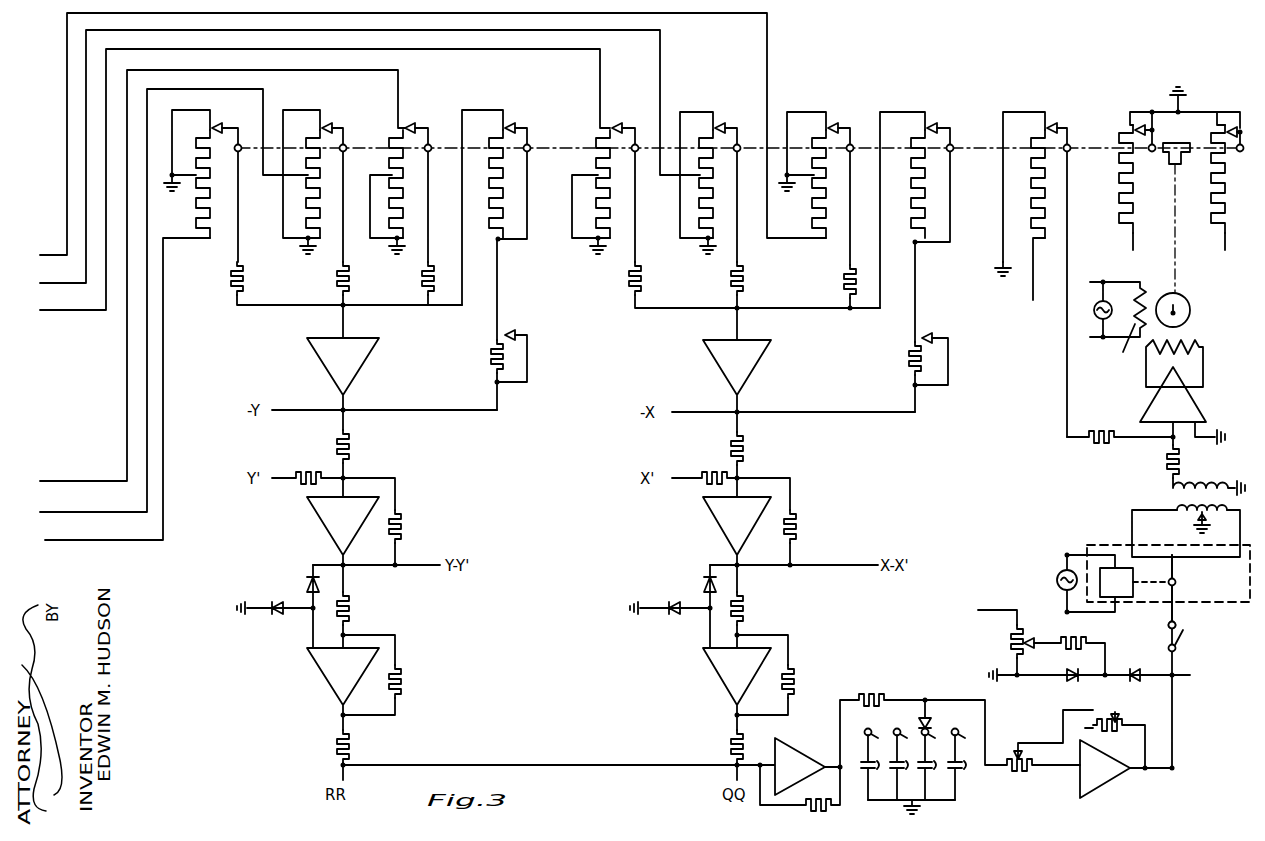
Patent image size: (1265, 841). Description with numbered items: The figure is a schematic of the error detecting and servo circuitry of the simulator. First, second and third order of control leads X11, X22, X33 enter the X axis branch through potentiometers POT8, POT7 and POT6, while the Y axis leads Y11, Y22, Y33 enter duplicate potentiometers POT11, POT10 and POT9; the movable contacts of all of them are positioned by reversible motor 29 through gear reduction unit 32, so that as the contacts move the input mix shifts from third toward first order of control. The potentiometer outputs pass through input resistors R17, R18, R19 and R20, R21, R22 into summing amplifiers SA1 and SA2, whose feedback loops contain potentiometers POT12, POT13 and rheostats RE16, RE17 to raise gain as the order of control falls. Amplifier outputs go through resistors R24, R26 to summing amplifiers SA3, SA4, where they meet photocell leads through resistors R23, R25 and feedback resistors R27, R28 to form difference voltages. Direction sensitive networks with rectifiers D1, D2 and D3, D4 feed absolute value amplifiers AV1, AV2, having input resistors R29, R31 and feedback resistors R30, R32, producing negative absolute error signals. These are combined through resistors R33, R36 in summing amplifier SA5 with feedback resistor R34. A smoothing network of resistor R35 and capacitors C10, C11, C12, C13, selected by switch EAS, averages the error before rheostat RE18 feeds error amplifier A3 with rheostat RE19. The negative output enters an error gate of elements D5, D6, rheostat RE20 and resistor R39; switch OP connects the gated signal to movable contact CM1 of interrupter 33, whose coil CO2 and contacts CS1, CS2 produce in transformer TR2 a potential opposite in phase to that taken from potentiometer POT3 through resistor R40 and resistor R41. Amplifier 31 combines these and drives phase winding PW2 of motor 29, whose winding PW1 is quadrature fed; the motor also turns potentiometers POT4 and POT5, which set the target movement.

The first order of control output lead X11 is at (417, 139).
The second order of control output lead X22 is at (354, 162).
The third order of control output lead X33 is at (309, 185).
The first order of control output lead (Y axis) Y11 is at (108, 394).
The second order of control output lead (Y axis) Y22 is at (157, 306).
The third order of control output lead (Y axis) Y33 is at (206, 281).
The potentiometer POT3 is at (1027, 113).
The potentiometer POT4 is at (1220, 114).
The potentiometer POT5 is at (1123, 115).
The potentiometer POT6 is at (618, 113).
The potentiometer POT7 is at (698, 113).
The potentiometer POT8 is at (798, 113).
The potentiometer POT9 is at (419, 113).
The potentiometer POT10 is at (317, 113).
The potentiometer POT11 is at (224, 122).
The potentiometer POT12 is at (903, 113).
The potentiometer POT13 is at (507, 113).
The gear reduction unit 32 is at (1171, 143).
The reversible position motor 29 is at (1190, 305).
The amplifier 31 is at (1182, 405).
The interrupter 33 is at (1242, 602).
The switch OP is at (1184, 636).
The input resistor R17 is at (630, 283).
The input resistor R18 is at (731, 283).
The input resistor R19 is at (843, 282).
The input resistor R20 is at (421, 283).
The input resistor R21 is at (337, 283).
The input resistor R22 is at (229, 272).
The resistor R23 is at (697, 470).
The input resistor R24 is at (742, 445).
The resistor R25 is at (298, 470).
The input resistor R26 is at (348, 449).
The resistor R27 is at (793, 528).
The resistor R28 is at (398, 528).
The input resistor R29 is at (742, 609).
The resistor R30 is at (791, 685).
The input resistor R31 is at (350, 609).
The resistor R32 is at (398, 685).
The input resistor R33 is at (333, 741).
The resistor R34 is at (800, 788).
The resistor R35 is at (877, 697).
The input resistor R36 is at (729, 731).
The resistor R39 is at (1081, 640).
The resistor R40 is at (1093, 430).
The resistor R41 is at (1166, 458).
The rheostat RE16 is at (910, 356).
The rheostat RE17 is at (490, 351).
The rheostat RE18 is at (1048, 758).
The rheostat RE19 is at (1120, 720).
The rheostat RE20 is at (987, 639).
The summing amplifier SA1 is at (737, 376).
The summing amplifier SA2 is at (343, 374).
The summing amplifier SA3 is at (737, 521).
The summing amplifier SA4 is at (343, 521).
The summing amplifier SA5 is at (800, 766).
The absolute value operational amplifier AV1 is at (737, 689).
The absolute value operational amplifier AV2 is at (343, 689).
The error amplifier A3 is at (1127, 676).
The unidirectional conducting device D1 is at (707, 577).
The unidirectional conducting device D2 is at (675, 600).
The unidirectional conducting device D3 is at (306, 579).
The unidirectional conducting device D4 is at (275, 618).
The unidirectional conducting element D5 is at (1134, 668).
The unidirectional conducting element D6 is at (1071, 682).
The capacitor C10 is at (875, 767).
The capacitor C11 is at (904, 767).
The capacitor C12 is at (932, 767).
The capacitor C13 is at (962, 767).
The switch EAS is at (956, 694).
The winding PW1 is at (1118, 326).
The phase winding PW2 is at (1191, 350).
The transformer TR2 is at (1178, 499).
The contact CS1 is at (1163, 551).
The contact CS2 is at (1191, 558).
The actuating coil CO2 is at (1100, 583).
The movable contact CM1 is at (1178, 576).